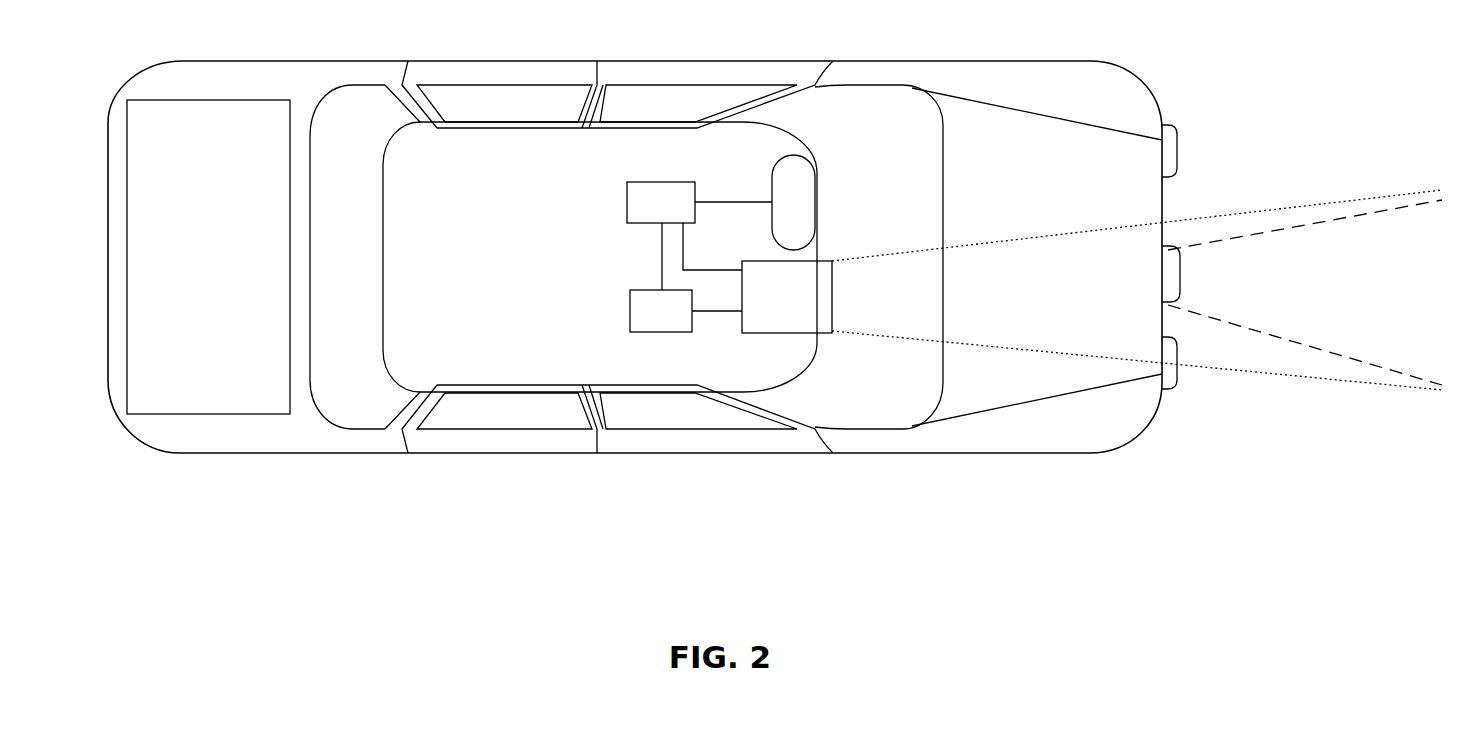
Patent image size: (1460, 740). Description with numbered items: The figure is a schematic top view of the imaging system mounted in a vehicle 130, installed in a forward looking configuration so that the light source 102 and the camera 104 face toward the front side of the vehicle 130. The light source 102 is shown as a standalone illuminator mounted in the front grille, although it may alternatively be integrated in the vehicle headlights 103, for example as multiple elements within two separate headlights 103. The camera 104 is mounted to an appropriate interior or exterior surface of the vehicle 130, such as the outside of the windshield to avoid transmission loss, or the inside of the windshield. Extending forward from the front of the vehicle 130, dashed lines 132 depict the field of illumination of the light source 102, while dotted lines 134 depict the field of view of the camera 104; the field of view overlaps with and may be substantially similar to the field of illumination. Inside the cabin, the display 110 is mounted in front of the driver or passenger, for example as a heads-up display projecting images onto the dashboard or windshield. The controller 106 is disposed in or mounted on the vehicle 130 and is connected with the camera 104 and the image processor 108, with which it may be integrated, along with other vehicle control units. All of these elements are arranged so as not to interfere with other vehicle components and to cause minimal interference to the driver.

The vehicle 130 is at (246, 58).
The light source 102 is at (1182, 258).
The vehicle headlights 103 is at (1180, 140).
The camera 104 is at (755, 335).
The controller 106 is at (628, 300).
The image processor 108 is at (640, 181).
The display 110 is at (770, 178).
The dashed lines 132 is at (1342, 226).
The dotted lines 134 is at (1364, 200).